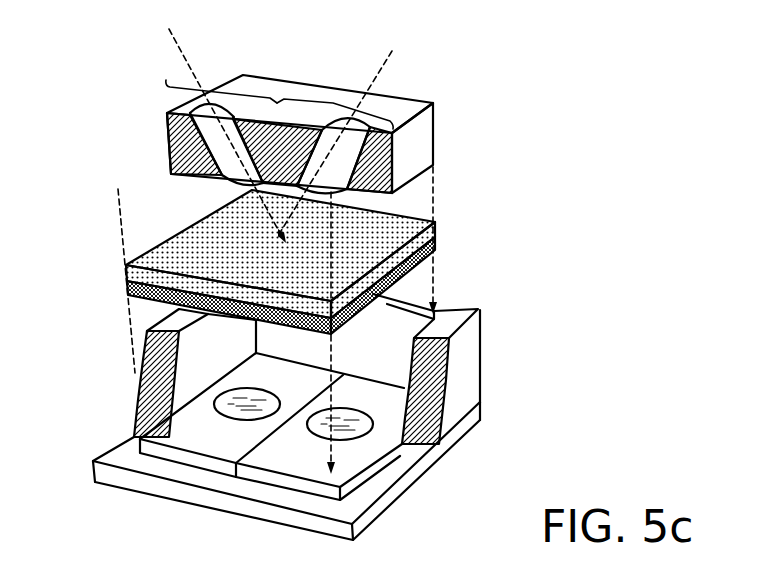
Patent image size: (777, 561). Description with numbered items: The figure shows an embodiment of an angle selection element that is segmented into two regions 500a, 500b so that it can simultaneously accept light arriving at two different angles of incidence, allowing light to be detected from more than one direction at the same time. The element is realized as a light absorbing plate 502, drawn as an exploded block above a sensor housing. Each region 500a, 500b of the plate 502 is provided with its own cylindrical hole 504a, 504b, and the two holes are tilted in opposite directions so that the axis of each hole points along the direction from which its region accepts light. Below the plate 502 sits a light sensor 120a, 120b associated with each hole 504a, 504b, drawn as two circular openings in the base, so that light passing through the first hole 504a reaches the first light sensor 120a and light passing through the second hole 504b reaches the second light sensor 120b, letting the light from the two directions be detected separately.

The region of angle selection element 500a is at (216, 88).
The region of angle selection element 500b is at (338, 100).
The light absorbing plate 502 is at (289, 144).
The cylindrical hole 504a is at (218, 143).
The cylindrical hole 504b is at (342, 157).
The light sensor 120a is at (204, 400).
The light sensor 120b is at (366, 443).